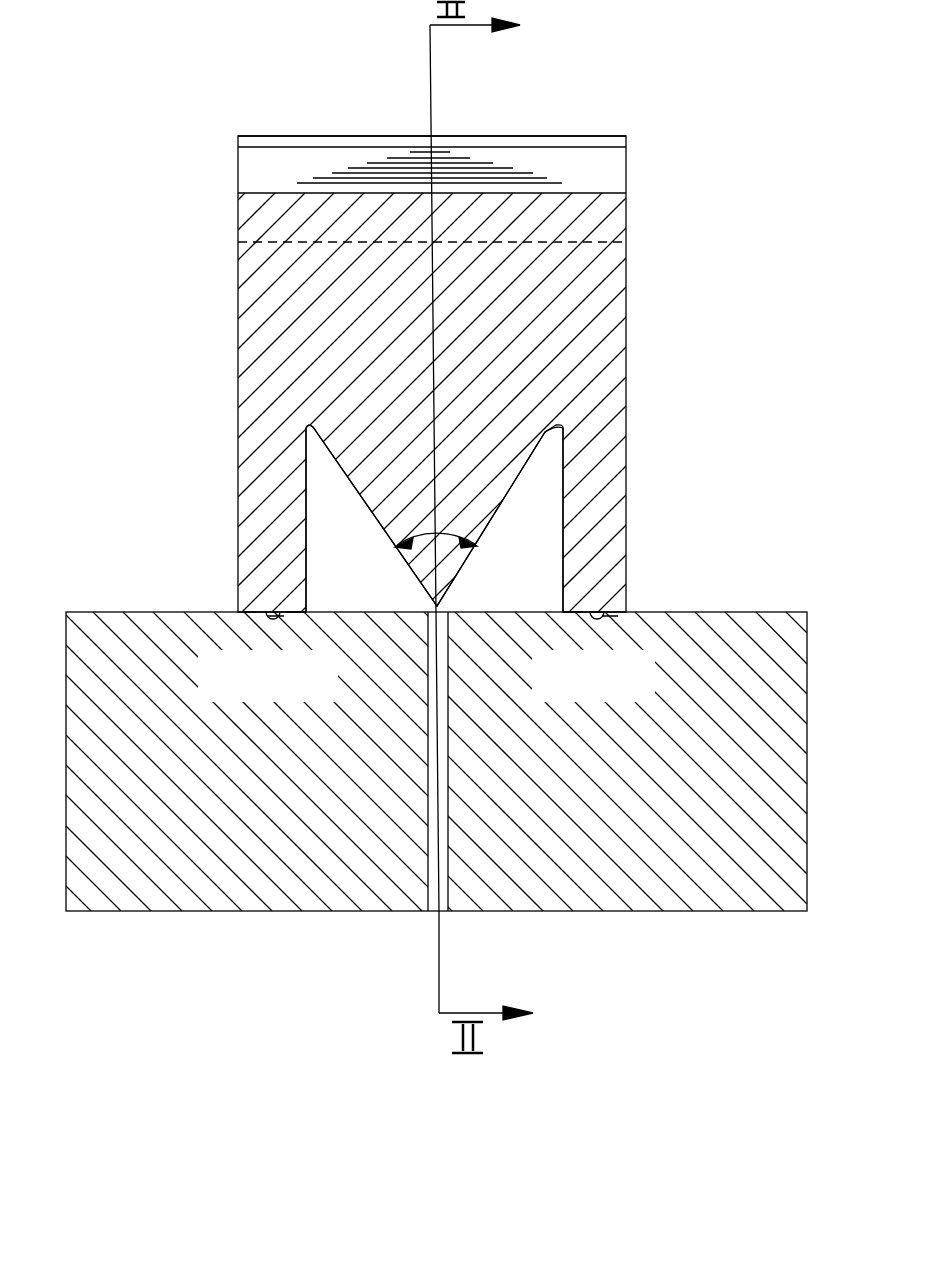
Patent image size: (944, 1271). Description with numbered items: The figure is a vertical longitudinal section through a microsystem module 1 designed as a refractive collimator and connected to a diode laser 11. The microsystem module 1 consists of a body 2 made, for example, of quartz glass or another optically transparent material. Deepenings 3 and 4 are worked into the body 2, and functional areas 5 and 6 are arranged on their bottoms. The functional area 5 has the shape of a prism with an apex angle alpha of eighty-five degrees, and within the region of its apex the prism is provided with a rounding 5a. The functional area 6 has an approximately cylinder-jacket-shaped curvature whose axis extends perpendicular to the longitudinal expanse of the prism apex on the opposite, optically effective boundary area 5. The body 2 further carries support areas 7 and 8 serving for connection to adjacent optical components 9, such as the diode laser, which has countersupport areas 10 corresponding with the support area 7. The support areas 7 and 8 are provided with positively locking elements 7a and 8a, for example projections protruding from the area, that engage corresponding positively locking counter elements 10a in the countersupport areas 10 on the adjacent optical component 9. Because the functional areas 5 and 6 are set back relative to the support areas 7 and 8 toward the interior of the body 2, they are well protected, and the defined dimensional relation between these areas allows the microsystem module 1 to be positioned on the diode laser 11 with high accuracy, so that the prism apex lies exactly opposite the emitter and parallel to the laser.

The microsystem module 1 is at (187, 312).
The body 2 is at (557, 328).
The deepening 3 is at (327, 487).
The deepening 4 is at (499, 157).
The functional area 5 is at (492, 517).
The rounding 5a is at (437, 606).
The functional area 6 is at (548, 192).
The support area 7 is at (273, 612).
The positively locking element 7a is at (296, 609).
The support area 8 is at (598, 144).
The positively locking element 8a is at (529, 139).
The adjacent optical component 9 is at (634, 873).
The countersupport area 10 is at (277, 622).
The positively locking counter element 10a is at (250, 613).
The diode laser 11 is at (433, 868).